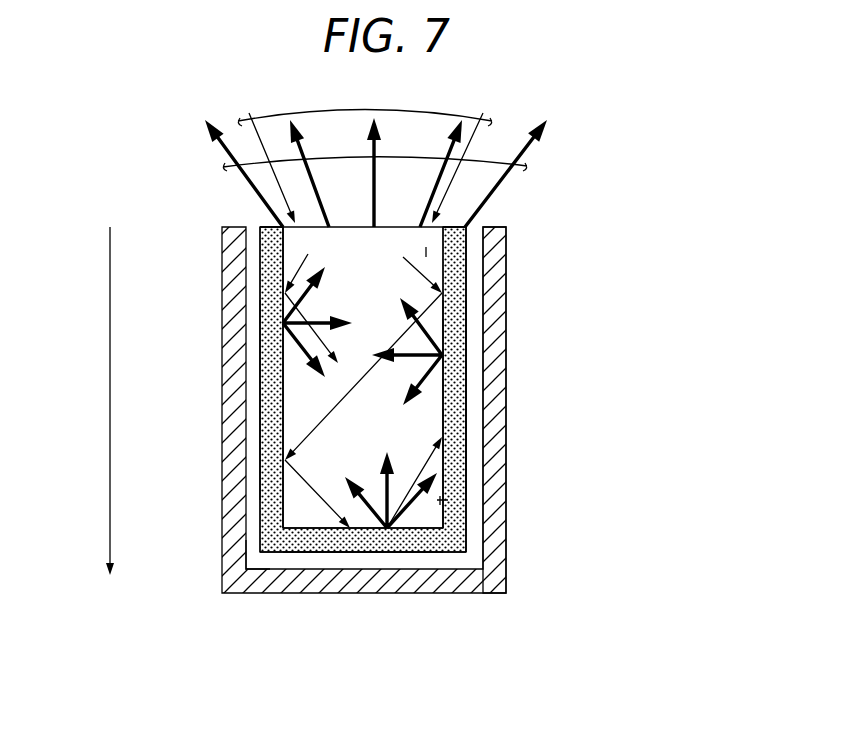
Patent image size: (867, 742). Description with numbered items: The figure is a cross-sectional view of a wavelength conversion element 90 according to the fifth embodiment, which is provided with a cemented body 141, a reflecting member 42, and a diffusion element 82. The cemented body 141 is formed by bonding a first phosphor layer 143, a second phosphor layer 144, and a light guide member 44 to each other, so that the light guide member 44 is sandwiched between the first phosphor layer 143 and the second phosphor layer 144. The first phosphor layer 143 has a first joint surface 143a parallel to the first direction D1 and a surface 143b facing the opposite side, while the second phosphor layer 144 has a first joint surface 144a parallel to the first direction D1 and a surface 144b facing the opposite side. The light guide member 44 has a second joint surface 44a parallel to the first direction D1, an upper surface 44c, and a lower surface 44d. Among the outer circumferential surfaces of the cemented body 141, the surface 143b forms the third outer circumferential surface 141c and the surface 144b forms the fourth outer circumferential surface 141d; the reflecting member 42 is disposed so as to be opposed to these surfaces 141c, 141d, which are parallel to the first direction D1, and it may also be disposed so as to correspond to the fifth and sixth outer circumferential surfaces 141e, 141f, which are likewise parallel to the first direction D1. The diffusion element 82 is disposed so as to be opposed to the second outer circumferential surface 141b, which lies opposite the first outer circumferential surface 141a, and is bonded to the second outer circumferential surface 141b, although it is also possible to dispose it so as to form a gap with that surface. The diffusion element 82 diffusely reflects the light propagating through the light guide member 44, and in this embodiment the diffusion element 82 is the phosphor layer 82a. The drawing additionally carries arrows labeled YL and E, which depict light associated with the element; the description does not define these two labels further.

The wavelength conversion element 90 is at (598, 151).
The diffusion element 82 is at (248, 536).
The phosphor layer 82a is at (209, 573).
The reflecting member 42 is at (503, 295).
The cemented body 141 is at (487, 660).
The second phosphor layer 144 is at (277, 508).
The light guide member 44 is at (408, 518).
The first phosphor layer 143 is at (453, 523).
The first outer circumferential surface 141a is at (313, 227).
The second outer circumferential surface 141b is at (293, 532).
The lower surface 44d is at (330, 629).
The third outer circumferential surface 141c is at (465, 447).
The surface facing opposite to first joint surface 143b is at (574, 400).
The fourth outer circumferential surface 141d is at (258, 403).
The surface facing opposite to first joint surface 144b is at (195, 400).
The first joint surface 144a is at (285, 392).
The first joint surface 143a is at (445, 412).
The second joint surface 44a is at (445, 378).
The upper surface 44c is at (408, 227).
The fifth outer circumferential surface 141e is at (448, 503).
The sixth outer circumferential surface 141f is at (428, 252).
The emitted light E is at (485, 123).
The light ray YL is at (233, 168).
The first direction D1 is at (110, 353).